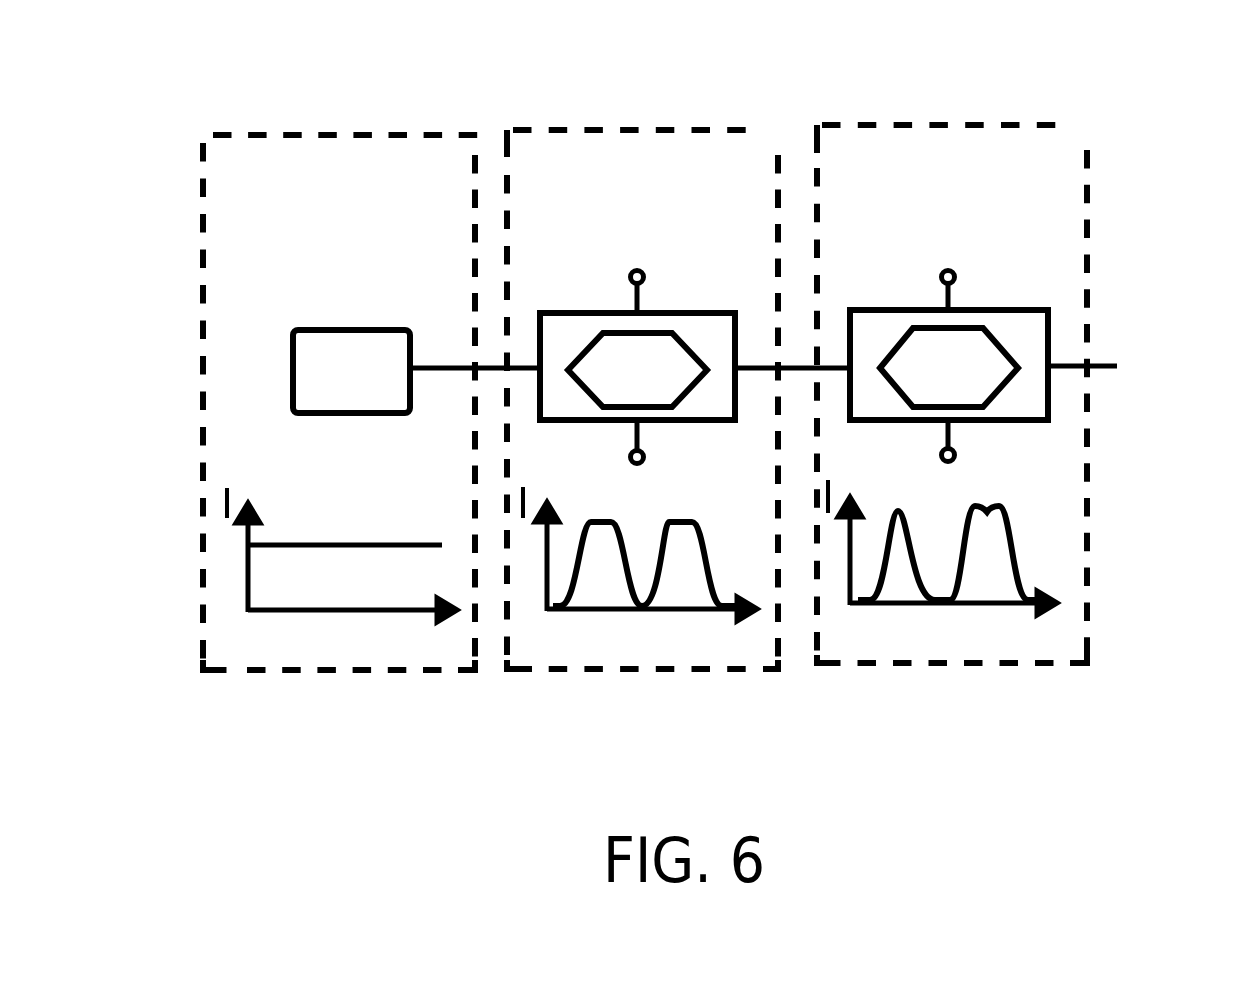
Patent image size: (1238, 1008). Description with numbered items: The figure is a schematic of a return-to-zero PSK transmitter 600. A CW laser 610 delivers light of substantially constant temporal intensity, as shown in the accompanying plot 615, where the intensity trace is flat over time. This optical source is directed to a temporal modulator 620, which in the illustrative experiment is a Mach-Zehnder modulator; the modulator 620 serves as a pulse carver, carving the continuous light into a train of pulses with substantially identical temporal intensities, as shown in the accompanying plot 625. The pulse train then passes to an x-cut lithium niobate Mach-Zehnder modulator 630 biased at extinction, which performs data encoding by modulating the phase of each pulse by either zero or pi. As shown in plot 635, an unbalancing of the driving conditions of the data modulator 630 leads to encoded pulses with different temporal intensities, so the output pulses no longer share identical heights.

The return-to-zero PSK transmitter 600 is at (282, 80).
The CW laser 610 is at (337, 330).
The plot 615 is at (258, 575).
The temporal modulator 620 is at (670, 312).
The plot 625 is at (597, 587).
The Mach-Zehnder modulator 630 is at (1050, 332).
The plot 635 is at (978, 588).